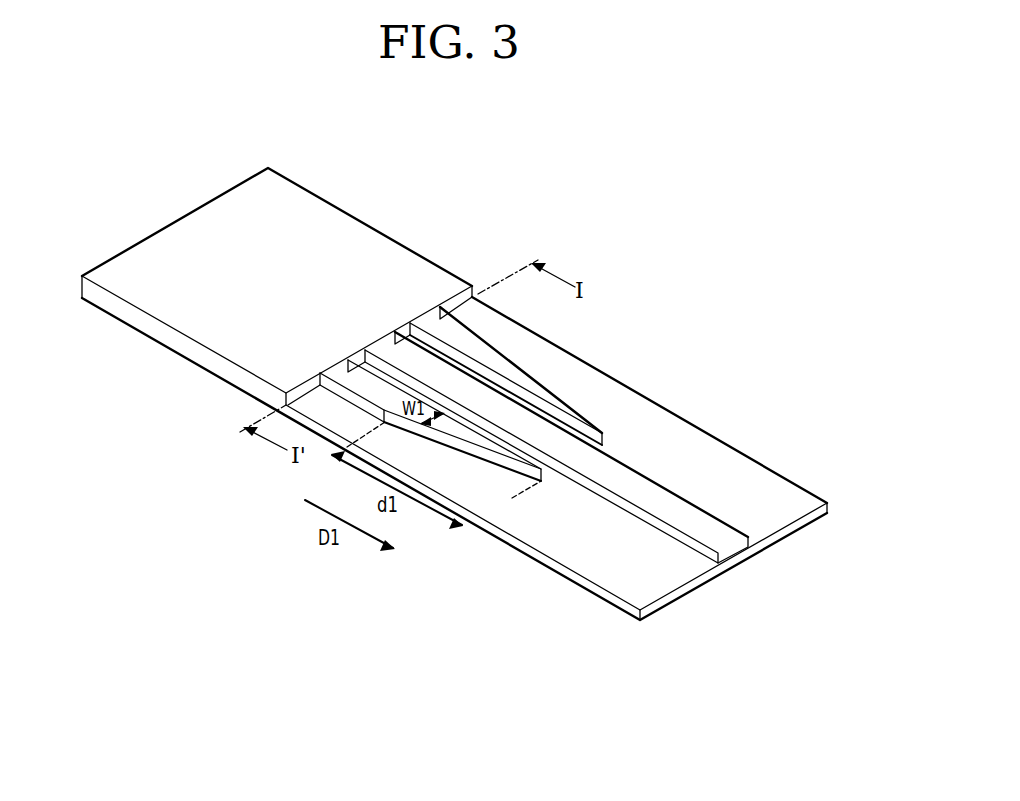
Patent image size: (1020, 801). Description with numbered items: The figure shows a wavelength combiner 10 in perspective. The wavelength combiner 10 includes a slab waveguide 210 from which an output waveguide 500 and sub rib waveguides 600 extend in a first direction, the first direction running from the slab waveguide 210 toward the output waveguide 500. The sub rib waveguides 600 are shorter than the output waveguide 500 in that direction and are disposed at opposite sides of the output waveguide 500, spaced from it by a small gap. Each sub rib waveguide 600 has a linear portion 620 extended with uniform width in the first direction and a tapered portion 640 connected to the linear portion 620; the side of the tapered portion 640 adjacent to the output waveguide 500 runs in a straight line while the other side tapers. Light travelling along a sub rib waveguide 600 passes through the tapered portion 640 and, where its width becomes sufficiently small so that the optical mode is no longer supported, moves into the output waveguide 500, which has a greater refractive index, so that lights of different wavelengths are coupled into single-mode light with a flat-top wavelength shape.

The wavelength combiner 10 is at (714, 155).
The slab waveguide 210 is at (360, 226).
The output waveguide 500 is at (725, 540).
The sub rib waveguide 600 is at (670, 303).
The linear portion 620 is at (470, 340).
The tapered portion 640 is at (530, 373).